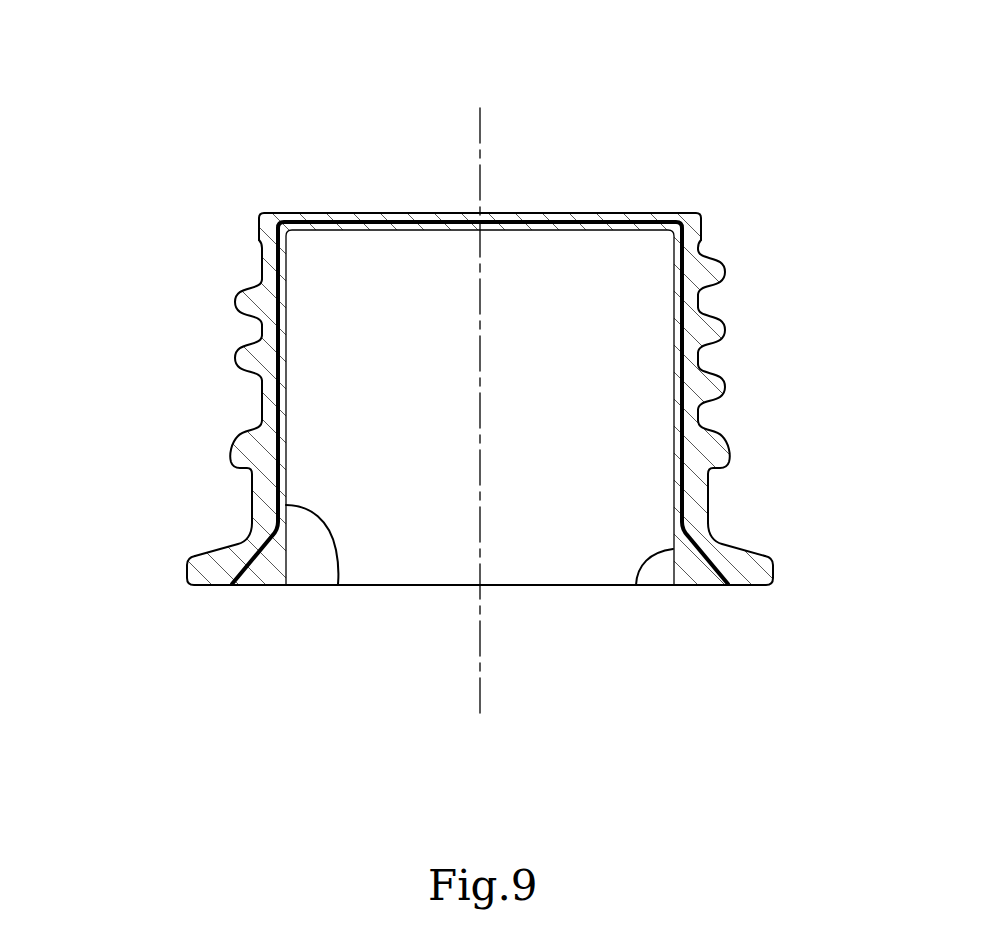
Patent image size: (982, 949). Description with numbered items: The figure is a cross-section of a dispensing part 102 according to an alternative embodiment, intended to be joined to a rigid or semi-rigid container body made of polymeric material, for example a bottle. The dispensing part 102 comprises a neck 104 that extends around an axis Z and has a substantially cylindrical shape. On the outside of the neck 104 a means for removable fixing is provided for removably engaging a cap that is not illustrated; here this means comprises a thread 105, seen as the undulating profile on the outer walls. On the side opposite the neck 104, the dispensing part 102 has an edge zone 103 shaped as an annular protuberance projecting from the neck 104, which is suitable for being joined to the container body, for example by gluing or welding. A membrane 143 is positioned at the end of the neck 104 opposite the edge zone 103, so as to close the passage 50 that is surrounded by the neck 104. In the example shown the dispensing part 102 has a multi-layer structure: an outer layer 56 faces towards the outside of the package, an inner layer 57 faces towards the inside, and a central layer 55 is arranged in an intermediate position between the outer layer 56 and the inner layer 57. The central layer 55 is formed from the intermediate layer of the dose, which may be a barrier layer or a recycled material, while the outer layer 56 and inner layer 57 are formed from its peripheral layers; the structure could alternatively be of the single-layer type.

The dispensing part 102 is at (181, 322).
The membrane 143 is at (351, 216).
The thread 105 is at (715, 377).
The outer layer 56 is at (213, 553).
The edge zone 103 is at (202, 574).
The central layer 55 is at (250, 558).
The passage 50 is at (569, 448).
The neck 104 is at (338, 585).
The inner layer 57 is at (636, 585).
The axis Z is at (480, 128).